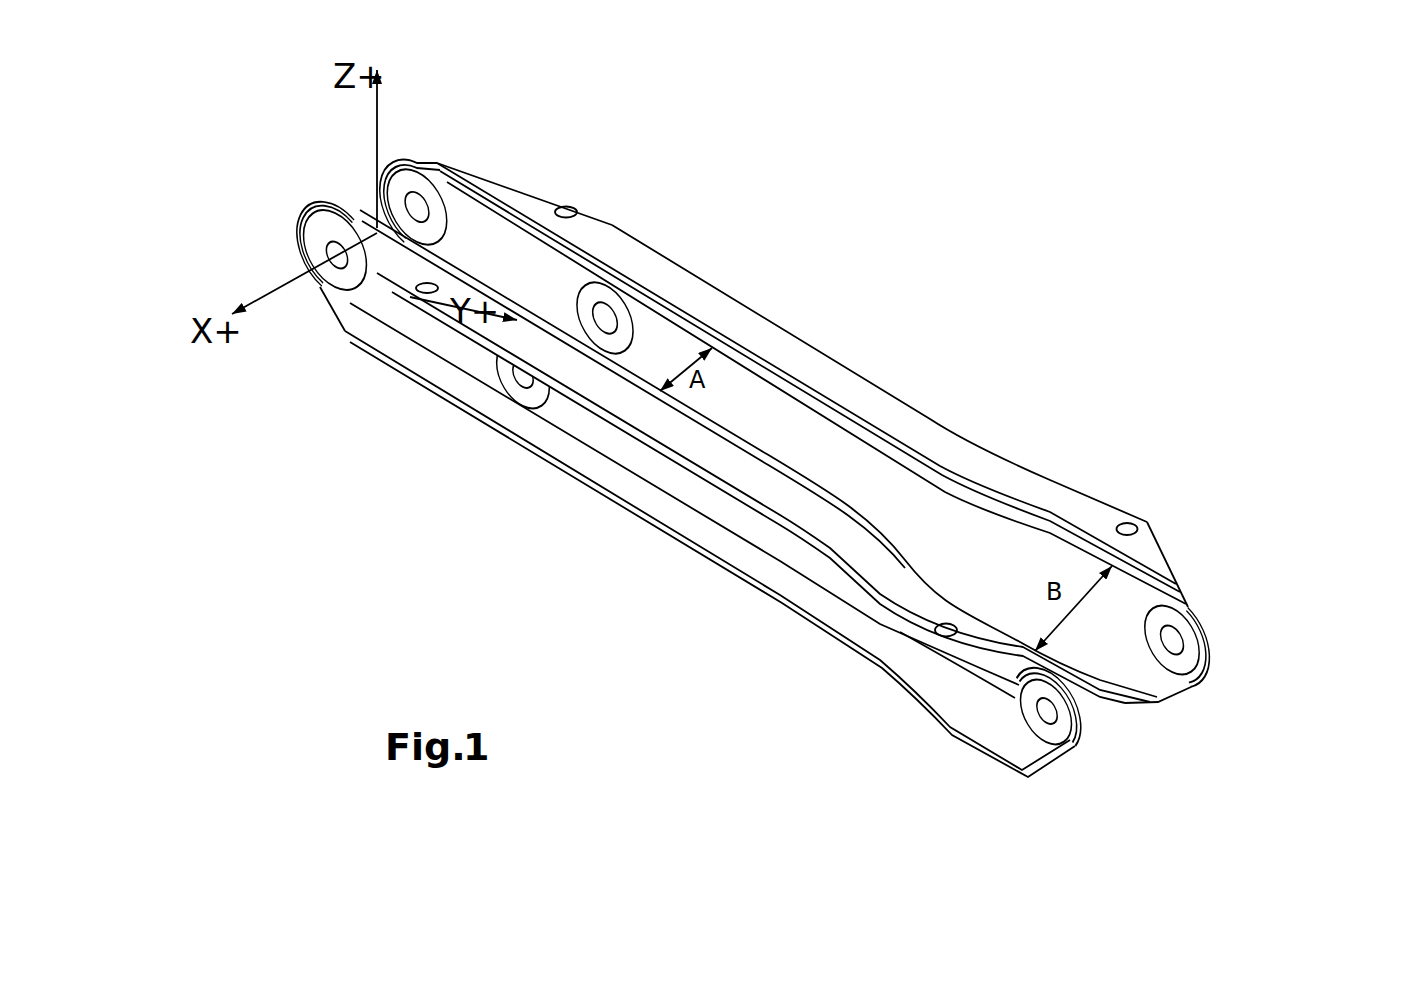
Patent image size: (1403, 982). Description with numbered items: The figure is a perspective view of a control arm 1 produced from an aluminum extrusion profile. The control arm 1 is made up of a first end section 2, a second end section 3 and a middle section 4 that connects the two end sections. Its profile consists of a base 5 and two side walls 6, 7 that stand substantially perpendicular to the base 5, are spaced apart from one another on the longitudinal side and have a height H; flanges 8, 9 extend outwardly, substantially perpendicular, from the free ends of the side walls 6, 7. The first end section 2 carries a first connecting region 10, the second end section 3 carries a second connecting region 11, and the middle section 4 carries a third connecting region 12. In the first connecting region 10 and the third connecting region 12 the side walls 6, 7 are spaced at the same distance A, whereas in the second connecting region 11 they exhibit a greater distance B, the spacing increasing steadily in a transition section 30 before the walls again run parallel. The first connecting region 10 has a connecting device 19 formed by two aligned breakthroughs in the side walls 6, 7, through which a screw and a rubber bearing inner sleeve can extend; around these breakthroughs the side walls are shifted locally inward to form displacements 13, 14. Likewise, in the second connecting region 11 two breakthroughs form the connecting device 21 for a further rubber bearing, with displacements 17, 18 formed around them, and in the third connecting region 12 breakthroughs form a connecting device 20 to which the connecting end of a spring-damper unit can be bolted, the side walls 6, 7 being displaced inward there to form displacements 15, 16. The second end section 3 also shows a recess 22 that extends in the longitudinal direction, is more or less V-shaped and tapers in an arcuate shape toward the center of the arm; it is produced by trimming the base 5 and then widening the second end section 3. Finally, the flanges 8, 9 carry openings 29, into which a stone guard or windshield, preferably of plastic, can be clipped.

The control arm 1 is at (1012, 180).
The first end section 2 is at (518, 118).
The second end section 3 is at (1215, 590).
The middle section 4 is at (798, 288).
The base 5 is at (1018, 637).
The side wall 6 is at (708, 505).
The side wall 7 is at (836, 441).
The flange 8 is at (822, 534).
The flange 9 is at (908, 418).
The first connecting region 10 is at (292, 262).
The second connecting region 11 is at (1066, 777).
The third connecting region 12 is at (482, 404).
The displacement 13 is at (323, 230).
The displacement 14 is at (419, 197).
The displacement 15 is at (527, 388).
The displacement 16 is at (622, 332).
The displacement 17 is at (1040, 715).
The displacement 18 is at (1193, 647).
The connecting device 19 is at (334, 272).
The connecting device 20 is at (629, 338).
The connecting device 21 is at (1177, 655).
The recess 22 is at (1100, 706).
The opening 29 is at (567, 204).
The transition section 30 is at (1039, 455).